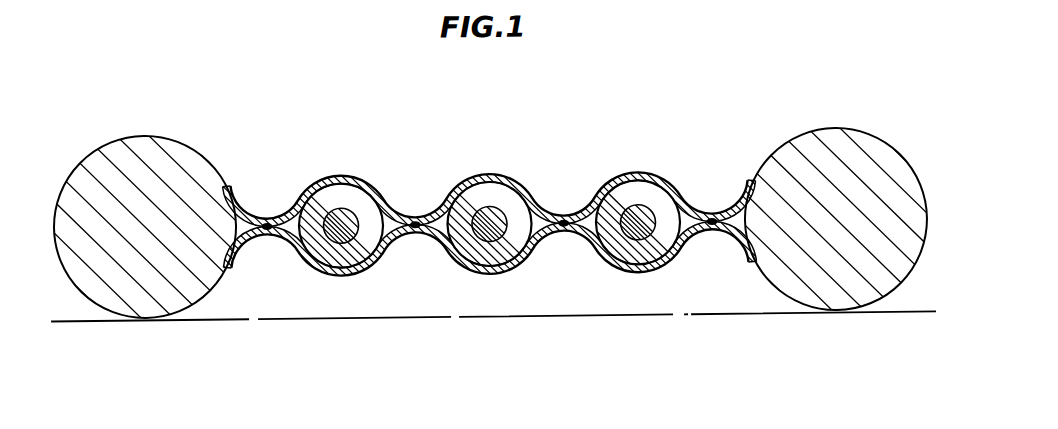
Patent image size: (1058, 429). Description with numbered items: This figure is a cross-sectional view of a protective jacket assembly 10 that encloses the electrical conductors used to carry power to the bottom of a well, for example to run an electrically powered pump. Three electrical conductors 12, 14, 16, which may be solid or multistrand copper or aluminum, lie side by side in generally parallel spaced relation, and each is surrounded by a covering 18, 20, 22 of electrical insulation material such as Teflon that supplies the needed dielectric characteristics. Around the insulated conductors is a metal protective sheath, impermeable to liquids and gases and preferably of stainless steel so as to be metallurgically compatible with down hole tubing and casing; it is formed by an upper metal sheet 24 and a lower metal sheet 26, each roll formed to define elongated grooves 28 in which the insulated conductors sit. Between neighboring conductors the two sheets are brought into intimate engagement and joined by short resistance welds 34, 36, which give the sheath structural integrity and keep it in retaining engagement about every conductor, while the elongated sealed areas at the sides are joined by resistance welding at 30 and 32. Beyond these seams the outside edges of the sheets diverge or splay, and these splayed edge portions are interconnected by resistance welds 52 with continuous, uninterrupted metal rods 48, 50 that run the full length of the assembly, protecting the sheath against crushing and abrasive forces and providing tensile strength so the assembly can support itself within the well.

The protective jacket assembly 10 is at (702, 126).
The electrical conductor 12 is at (312, 251).
The electrical conductor 14 is at (505, 263).
The electrical conductor 16 is at (665, 253).
The insulation covering 18 is at (341, 186).
The insulation covering 20 is at (470, 192).
The insulation covering 22 is at (645, 190).
The upper metal sheet 24 is at (493, 178).
The lower metal sheet 26 is at (630, 268).
The elongated grooves 28 is at (445, 248).
The resistance weld 30 is at (268, 220).
The resistance weld 32 is at (712, 224).
The short resistance weld 34 is at (415, 221).
The short resistance weld 36 is at (565, 228).
The metal rod 48 is at (145, 134).
The metal rod 50 is at (836, 133).
The resistance welds 52 is at (231, 262).